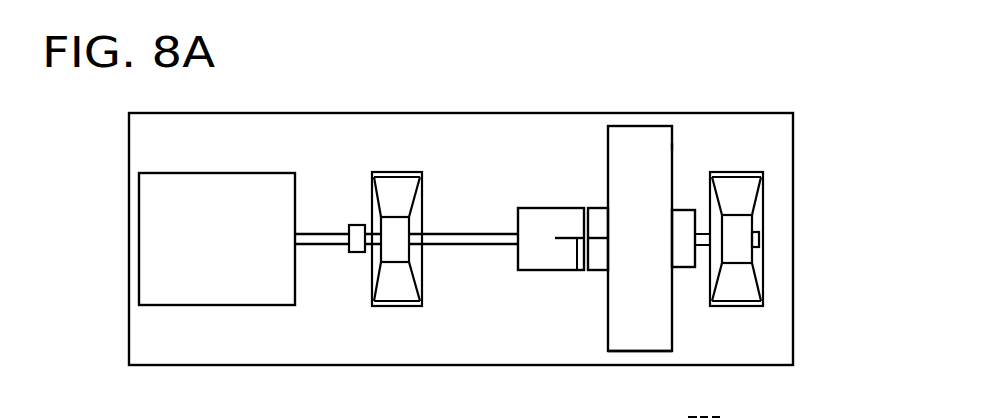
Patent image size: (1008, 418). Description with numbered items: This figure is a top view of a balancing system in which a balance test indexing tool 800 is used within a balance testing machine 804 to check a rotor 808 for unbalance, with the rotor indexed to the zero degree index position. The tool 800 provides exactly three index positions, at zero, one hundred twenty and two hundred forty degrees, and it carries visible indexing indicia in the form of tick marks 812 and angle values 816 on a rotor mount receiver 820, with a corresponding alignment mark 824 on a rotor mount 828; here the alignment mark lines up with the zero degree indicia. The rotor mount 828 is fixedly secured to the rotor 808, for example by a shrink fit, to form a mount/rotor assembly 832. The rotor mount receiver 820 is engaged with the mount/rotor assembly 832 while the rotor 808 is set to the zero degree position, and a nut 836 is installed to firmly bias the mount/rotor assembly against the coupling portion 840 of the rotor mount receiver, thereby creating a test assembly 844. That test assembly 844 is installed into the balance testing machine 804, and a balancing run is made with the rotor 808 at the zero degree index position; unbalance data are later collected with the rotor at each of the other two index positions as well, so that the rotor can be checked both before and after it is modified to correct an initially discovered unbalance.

The balance test indexing tool 800 is at (562, 197).
The balance testing machine 804 is at (738, 106).
The rotor 808 is at (672, 142).
The tick marks 812 is at (562, 247).
The angle values 816 is at (531, 216).
The rotor mount receiver 820 is at (450, 249).
The alignment mark 824 is at (596, 245).
The rotor mount 828 is at (600, 208).
The mount/rotor assembly 832 is at (648, 124).
The nut 836 is at (683, 268).
The coupling portion 840 is at (577, 271).
The test assembly 844 is at (627, 352).